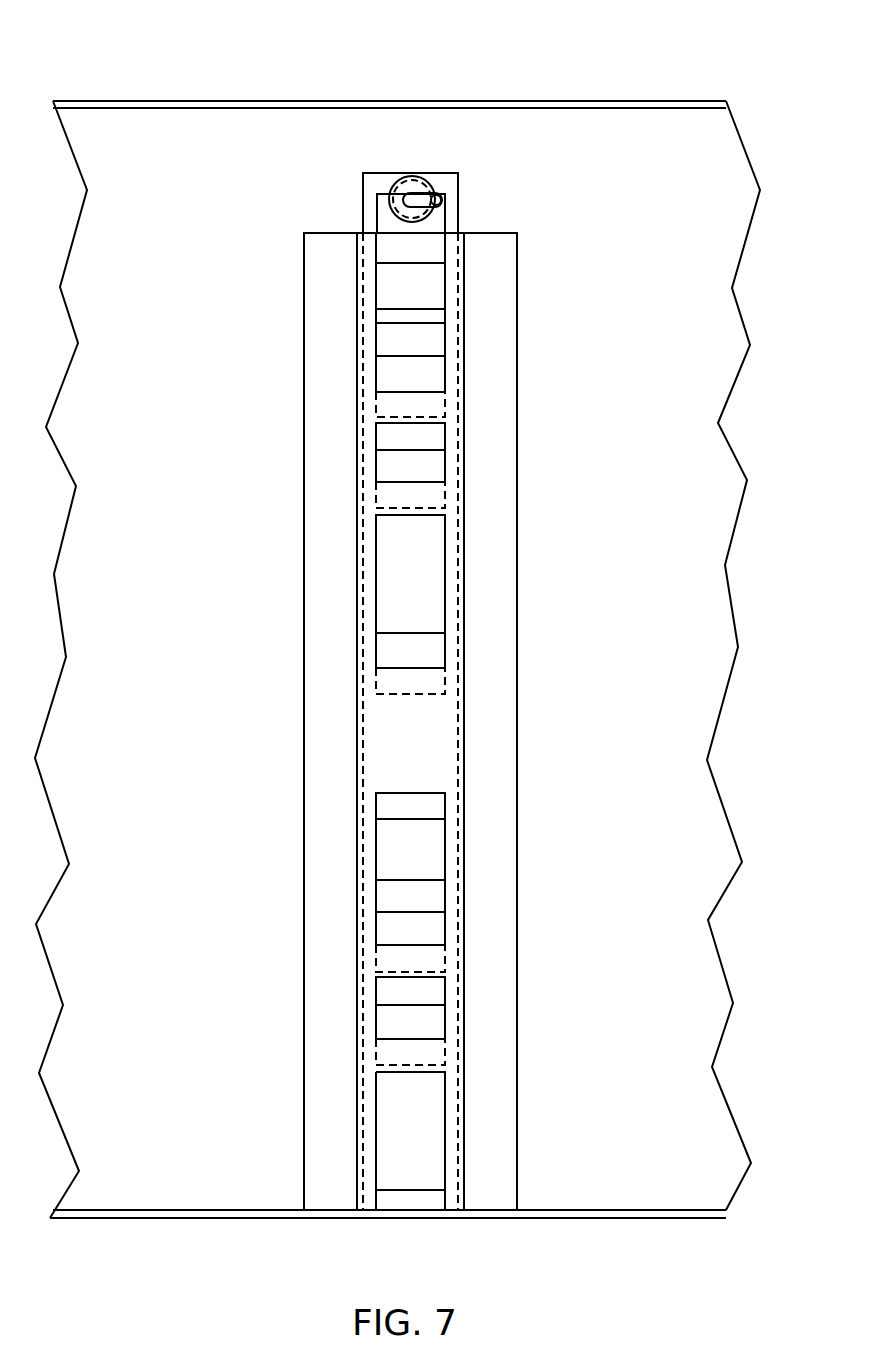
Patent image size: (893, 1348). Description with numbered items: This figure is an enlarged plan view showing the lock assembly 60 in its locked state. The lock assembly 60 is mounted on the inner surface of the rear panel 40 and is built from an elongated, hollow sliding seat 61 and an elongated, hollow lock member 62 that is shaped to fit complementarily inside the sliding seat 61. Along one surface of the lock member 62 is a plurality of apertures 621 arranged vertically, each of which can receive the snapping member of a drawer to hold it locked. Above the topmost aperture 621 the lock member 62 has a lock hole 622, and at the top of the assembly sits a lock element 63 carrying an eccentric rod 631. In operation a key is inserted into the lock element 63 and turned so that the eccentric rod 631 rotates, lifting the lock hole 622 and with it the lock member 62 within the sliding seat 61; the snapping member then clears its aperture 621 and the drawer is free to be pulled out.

The rear panel 40 is at (163, 153).
The lock assembly 60 is at (535, 223).
The sliding seat 61 is at (485, 745).
The lock member 62 is at (368, 603).
The apertures 621 is at (427, 577).
The lock hole 622 is at (380, 218).
The lock element 63 is at (407, 188).
The eccentric rod 631 is at (435, 195).